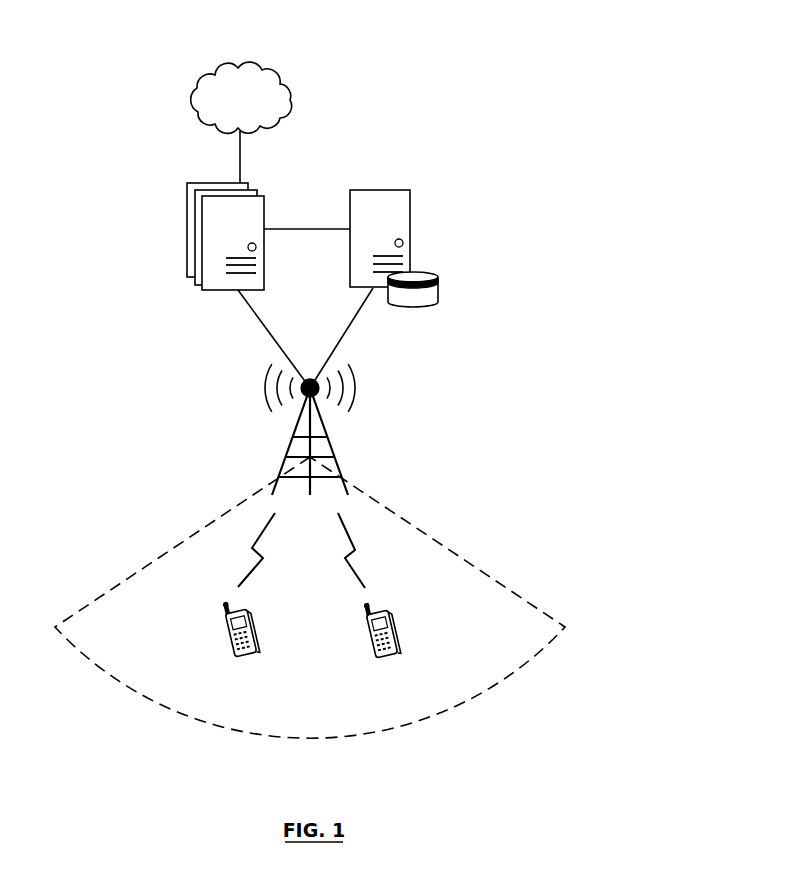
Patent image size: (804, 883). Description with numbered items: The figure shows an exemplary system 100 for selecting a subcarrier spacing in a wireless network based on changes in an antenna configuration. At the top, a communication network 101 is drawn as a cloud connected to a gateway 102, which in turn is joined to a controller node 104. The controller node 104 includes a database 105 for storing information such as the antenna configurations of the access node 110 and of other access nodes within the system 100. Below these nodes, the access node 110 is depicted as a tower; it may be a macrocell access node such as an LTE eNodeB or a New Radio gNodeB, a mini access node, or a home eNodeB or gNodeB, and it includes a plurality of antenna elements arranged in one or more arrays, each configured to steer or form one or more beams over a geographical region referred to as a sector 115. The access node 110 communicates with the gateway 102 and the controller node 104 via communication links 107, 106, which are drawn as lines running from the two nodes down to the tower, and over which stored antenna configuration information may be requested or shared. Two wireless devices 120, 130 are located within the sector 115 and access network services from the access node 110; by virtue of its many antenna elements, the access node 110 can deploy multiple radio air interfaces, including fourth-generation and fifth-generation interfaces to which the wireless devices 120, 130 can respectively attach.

The system 100 is at (427, 47).
The communication network 101 is at (226, 107).
The gateway 102 is at (193, 182).
The controller node 104 is at (411, 190).
The database 105 is at (436, 275).
The communication link 106 is at (348, 325).
The communication link 107 is at (255, 313).
The access node 110 is at (285, 463).
The sector 115 is at (157, 557).
The wireless device 120 is at (236, 652).
The wireless device 130 is at (380, 650).